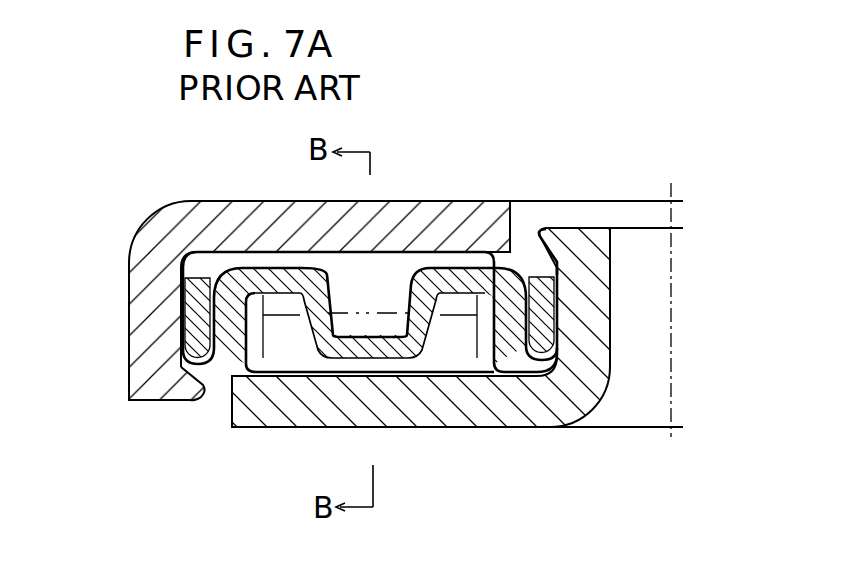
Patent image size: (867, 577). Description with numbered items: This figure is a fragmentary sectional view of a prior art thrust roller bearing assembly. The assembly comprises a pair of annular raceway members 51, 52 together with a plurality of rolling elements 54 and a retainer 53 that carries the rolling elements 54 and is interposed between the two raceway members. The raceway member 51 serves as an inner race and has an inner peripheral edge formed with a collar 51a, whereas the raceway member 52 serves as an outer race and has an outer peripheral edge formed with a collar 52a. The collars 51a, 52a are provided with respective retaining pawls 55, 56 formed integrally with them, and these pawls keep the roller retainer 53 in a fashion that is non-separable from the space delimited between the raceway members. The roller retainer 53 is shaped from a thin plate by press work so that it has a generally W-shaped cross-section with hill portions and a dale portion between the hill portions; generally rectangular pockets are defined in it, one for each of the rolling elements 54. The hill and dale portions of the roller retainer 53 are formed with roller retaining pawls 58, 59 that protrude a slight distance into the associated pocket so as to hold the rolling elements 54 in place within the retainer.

The raceway member 51 is at (432, 407).
The collar 51a is at (583, 318).
The raceway member 52 is at (277, 213).
The collar 52a is at (142, 312).
The retainer 53 is at (512, 280).
The rolling elements 54 is at (440, 262).
The retaining pawl 55 is at (543, 230).
The retaining pawl 56 is at (186, 401).
The roller retaining pawl 58 is at (325, 365).
The roller retaining pawl 59 is at (260, 250).